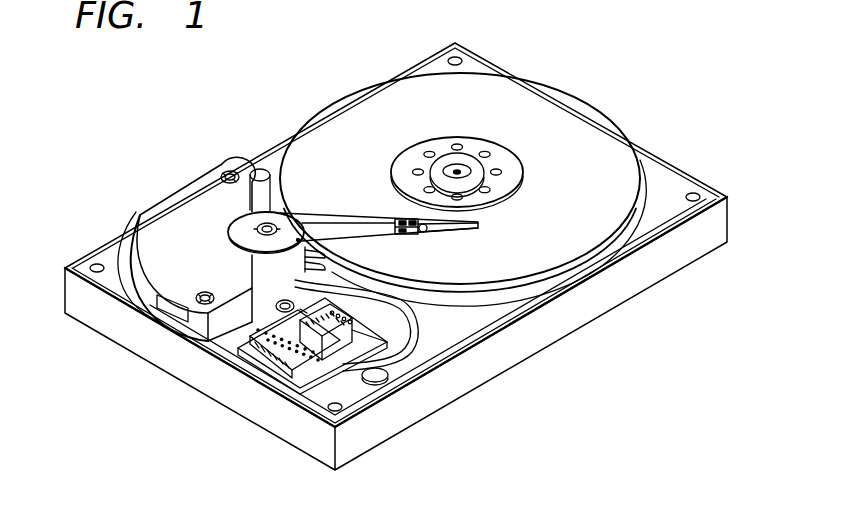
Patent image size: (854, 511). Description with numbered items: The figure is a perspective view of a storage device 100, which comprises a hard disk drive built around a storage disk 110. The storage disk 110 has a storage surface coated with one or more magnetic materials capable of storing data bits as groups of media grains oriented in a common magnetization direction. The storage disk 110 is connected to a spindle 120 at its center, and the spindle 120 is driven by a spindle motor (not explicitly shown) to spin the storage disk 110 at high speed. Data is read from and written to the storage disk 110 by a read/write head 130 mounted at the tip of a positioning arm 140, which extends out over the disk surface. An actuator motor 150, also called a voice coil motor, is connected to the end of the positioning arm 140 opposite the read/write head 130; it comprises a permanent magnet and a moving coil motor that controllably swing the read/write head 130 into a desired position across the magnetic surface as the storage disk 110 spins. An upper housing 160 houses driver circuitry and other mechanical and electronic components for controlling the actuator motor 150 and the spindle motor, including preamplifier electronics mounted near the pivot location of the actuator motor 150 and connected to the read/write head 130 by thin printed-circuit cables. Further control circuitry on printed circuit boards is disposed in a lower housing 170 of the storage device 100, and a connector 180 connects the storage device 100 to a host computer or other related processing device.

The storage device 100 is at (187, 92).
The storage disk 110 is at (567, 108).
The spindle 120 is at (478, 165).
The read/write head 130 is at (452, 226).
The positioning arm 140 is at (324, 217).
The actuator motor 150 is at (245, 236).
The upper housing 160 is at (168, 218).
The lower housing 170 is at (373, 427).
The connector 180 is at (280, 352).